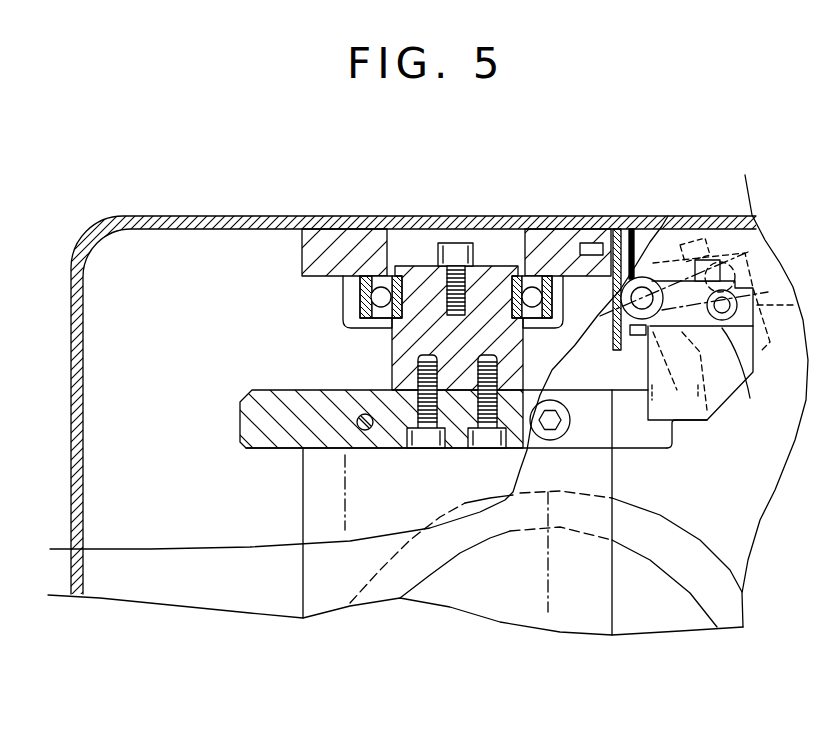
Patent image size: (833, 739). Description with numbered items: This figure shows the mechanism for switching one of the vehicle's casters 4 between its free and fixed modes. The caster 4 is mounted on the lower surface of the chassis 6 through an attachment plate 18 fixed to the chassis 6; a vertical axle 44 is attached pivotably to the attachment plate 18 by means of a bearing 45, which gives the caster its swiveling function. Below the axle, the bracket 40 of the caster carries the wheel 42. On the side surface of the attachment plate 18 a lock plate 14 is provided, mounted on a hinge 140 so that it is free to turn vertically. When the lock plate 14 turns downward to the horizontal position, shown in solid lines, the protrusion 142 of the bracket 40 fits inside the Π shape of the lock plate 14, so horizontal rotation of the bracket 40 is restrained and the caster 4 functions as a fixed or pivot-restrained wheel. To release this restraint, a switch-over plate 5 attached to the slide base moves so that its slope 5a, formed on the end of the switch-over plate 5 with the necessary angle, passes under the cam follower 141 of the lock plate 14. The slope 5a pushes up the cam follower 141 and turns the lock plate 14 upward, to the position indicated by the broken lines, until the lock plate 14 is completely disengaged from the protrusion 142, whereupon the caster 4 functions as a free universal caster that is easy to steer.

The caster 4 is at (288, 520).
The switch-over plate 5 is at (776, 296).
The slope 5a is at (701, 318).
The chassis 6 is at (468, 218).
The lock plate 14 is at (694, 422).
The attachment plate 18 is at (345, 228).
The bracket 40 is at (495, 598).
The wheel 42 is at (455, 522).
The vertical axle 44 is at (395, 350).
The bearing 45 is at (360, 302).
The hinge 140 is at (642, 297).
The cam follower 141 is at (748, 380).
The protrusion 142 is at (640, 437).